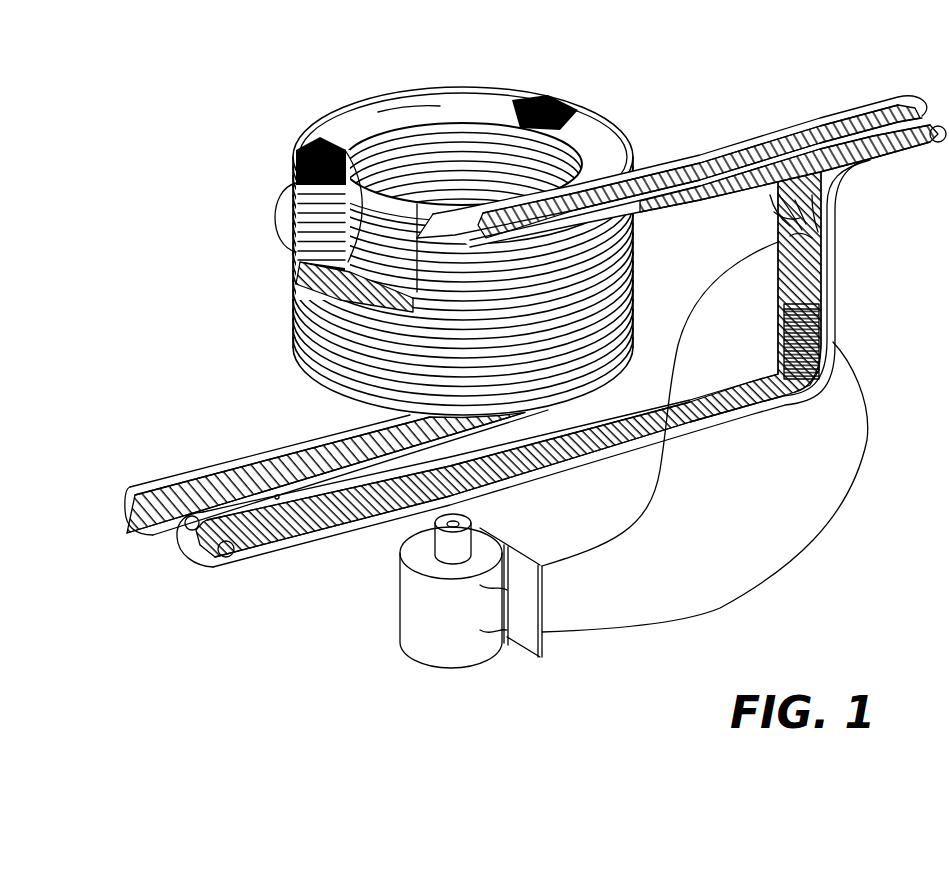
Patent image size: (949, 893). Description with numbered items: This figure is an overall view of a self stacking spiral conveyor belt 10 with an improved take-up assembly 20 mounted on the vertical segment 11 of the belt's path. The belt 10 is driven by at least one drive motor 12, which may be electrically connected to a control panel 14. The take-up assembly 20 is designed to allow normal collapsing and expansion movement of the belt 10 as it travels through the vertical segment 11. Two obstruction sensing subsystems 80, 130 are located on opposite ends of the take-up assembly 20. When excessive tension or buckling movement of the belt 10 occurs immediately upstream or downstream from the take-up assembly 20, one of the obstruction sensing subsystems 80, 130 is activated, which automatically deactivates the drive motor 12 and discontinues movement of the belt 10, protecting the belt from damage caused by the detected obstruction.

The conveyor belt 10 is at (344, 92).
The vertical segment 11 is at (842, 309).
The take-up assembly 20 is at (846, 276).
The obstruction sensing subsystem 80 is at (844, 218).
The obstruction sensing subsystem 130 is at (770, 338).
The drive motor 12 is at (400, 607).
The control panel 14 is at (524, 509).